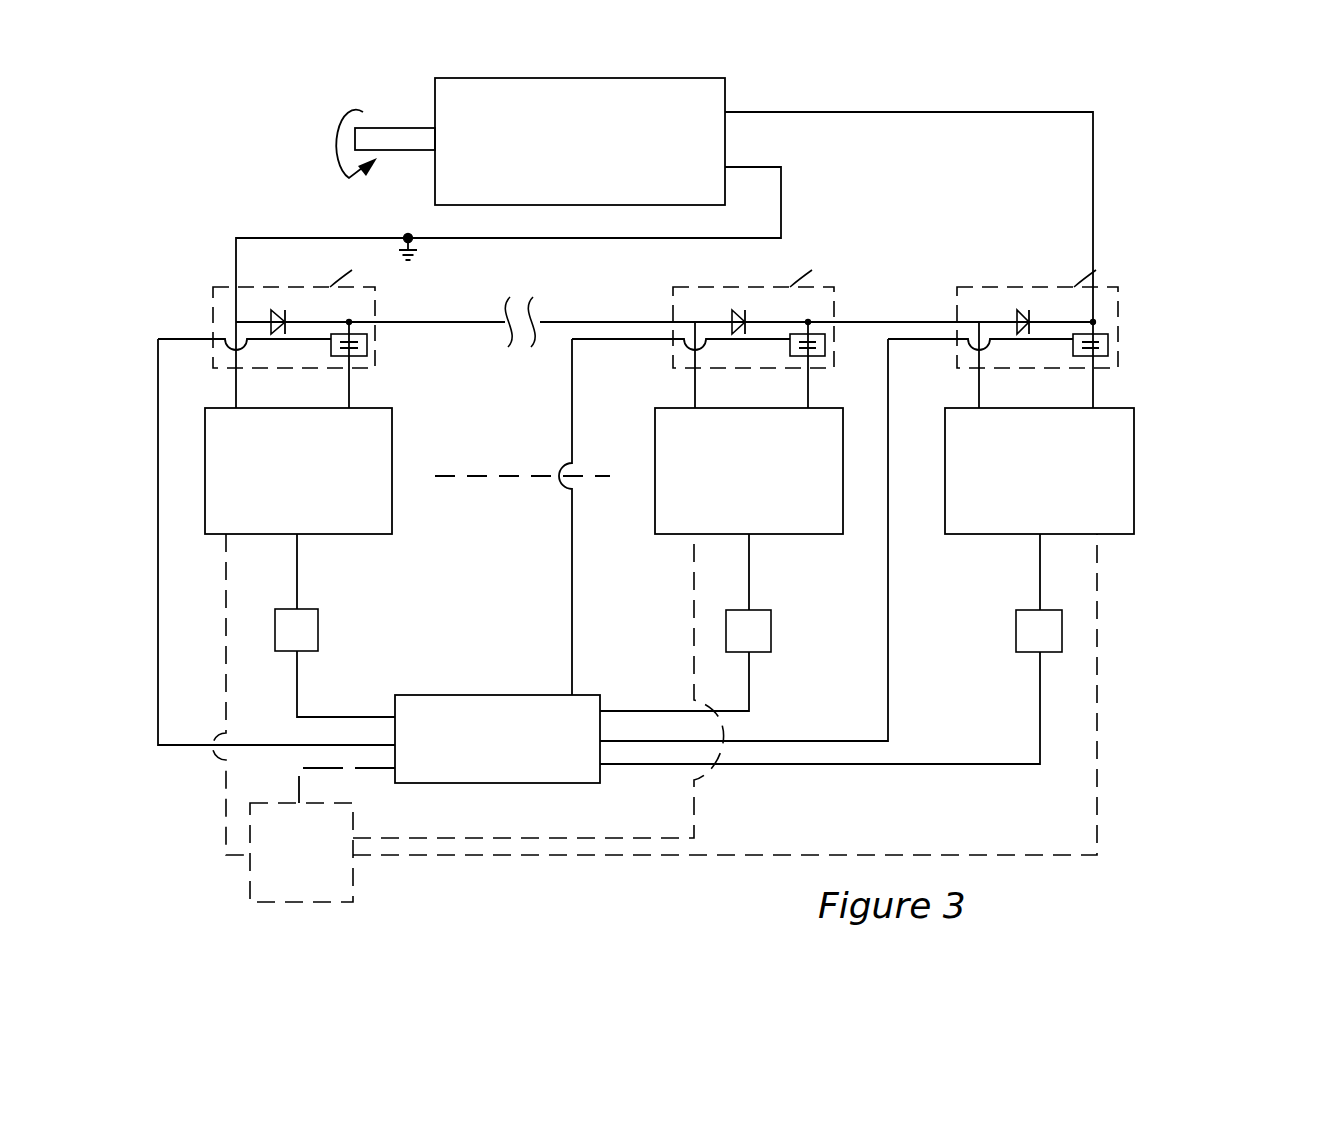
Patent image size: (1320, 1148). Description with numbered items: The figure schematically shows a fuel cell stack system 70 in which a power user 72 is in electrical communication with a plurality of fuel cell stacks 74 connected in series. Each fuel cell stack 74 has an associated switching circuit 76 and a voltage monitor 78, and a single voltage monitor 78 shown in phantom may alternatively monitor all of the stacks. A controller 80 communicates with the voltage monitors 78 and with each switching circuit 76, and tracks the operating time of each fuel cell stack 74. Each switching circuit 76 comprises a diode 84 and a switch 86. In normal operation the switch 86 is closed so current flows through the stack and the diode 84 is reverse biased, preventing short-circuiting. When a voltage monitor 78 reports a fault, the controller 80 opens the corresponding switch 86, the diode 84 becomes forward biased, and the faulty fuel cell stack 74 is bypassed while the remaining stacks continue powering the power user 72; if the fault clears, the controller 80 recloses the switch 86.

The fuel cell stack system 70 is at (1160, 750).
The power user 72 is at (445, 100).
The fuel cell stack 74 is at (388, 508).
The switching circuit 76 is at (213, 300).
The voltage monitor 78 is at (318, 636).
The controller 80 is at (490, 698).
The diode 84 is at (281, 312).
The switch 86 is at (365, 355).